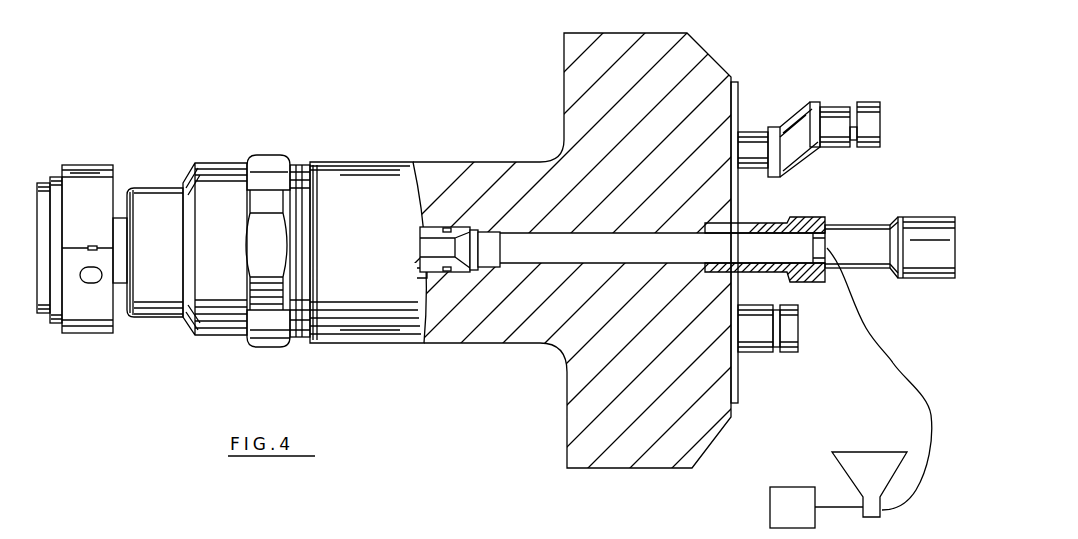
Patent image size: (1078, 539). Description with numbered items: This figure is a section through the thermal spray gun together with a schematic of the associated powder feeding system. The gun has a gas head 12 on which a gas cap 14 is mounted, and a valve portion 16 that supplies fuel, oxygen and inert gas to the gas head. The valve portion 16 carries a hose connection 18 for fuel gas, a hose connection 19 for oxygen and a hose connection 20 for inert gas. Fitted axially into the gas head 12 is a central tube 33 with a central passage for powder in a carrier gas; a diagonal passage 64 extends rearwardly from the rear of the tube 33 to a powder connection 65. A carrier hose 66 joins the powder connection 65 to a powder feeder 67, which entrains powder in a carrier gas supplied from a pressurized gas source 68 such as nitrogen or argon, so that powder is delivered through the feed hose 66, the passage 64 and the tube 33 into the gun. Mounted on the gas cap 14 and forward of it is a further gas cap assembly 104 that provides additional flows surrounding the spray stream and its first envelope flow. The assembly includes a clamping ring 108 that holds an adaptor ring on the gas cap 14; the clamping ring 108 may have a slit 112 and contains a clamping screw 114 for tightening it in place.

The gas cap assembly 104 is at (84, 358).
The clamping ring 108 is at (90, 165).
The slit 112 is at (70, 247).
The clamping screw 114 is at (90, 258).
The gas cap 14 is at (117, 285).
The diagonal passage 64 is at (150, 188).
The gas head 12 is at (352, 162).
The valve portion 16 is at (564, 83).
The central tube 33 is at (500, 257).
The powder connection 65 is at (815, 217).
The hose connection for oxygen 19 is at (927, 215).
The hose connection for inert gas 20 is at (857, 100).
The hose connection for fuel gas 18 is at (787, 355).
The carrier hose 66 is at (893, 365).
The powder feeder 67 is at (861, 480).
The pressurized gas source 68 is at (784, 517).